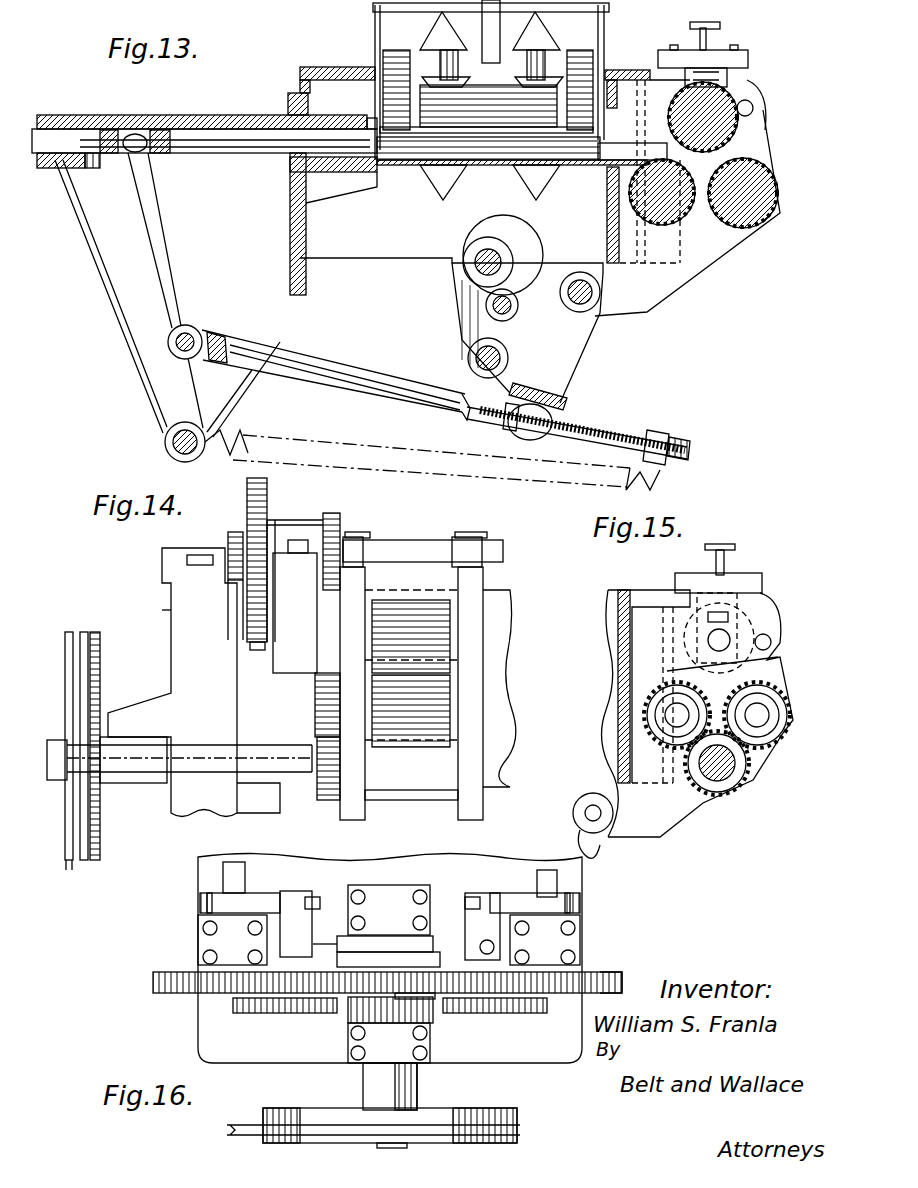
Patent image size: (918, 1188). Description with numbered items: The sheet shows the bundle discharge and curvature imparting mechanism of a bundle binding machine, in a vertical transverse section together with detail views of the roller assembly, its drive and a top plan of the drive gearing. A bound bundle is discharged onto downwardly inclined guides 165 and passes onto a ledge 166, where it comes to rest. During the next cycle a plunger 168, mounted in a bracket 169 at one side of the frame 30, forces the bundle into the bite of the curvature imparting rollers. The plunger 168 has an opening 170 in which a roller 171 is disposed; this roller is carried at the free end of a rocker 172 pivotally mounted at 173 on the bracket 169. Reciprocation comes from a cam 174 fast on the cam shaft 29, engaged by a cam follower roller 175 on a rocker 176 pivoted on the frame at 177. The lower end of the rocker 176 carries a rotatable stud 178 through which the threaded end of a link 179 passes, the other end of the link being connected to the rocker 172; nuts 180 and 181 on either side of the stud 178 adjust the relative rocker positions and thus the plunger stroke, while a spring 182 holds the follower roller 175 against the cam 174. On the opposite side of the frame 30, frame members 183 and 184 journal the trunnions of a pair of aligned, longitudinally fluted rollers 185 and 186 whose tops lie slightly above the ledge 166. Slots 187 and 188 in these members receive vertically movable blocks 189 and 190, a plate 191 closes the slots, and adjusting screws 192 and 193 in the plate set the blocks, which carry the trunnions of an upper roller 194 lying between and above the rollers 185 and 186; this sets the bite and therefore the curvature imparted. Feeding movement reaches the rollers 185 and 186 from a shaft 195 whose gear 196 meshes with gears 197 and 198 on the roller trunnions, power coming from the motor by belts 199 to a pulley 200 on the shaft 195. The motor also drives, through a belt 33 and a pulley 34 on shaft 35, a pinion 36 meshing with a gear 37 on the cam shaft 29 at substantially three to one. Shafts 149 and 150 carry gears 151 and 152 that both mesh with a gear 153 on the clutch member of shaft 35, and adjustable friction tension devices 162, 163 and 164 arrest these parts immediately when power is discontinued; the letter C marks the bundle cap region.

In FIG. 13, the cam shaft 29 is at (480, 250).
In FIG. 13, the frame 30 is at (608, 215).
In FIG. 14, the frame 30 is at (512, 694).
In FIG. 15, the frame 30 is at (683, 724).
In FIG. 16, the belt 33 is at (235, 1128).
In FIG. 16, the pulley 34 is at (514, 1100).
In FIG. 16, the shaft 35 is at (405, 1148).
In FIG. 14, the pinion 36 is at (240, 528).
In FIG. 16, the pinion 36 is at (350, 1016).
In FIG. 16, the gear 37 is at (270, 1013).
In FIG. 14, the shaft 149 is at (430, 560).
In FIG. 16, the shaft 149 is at (556, 863).
In FIG. 16, the shaft 150 is at (247, 879).
In FIG. 14, the gear 151 is at (272, 493).
In FIG. 16, the gear 151 is at (628, 966).
In FIG. 16, the gear 152 is at (173, 963).
In FIG. 14, the gear 153 is at (258, 652).
In FIG. 16, the gear 153 is at (392, 990).
In FIG. 16, the adjustable friction tension device 162 is at (582, 904).
In FIG. 16, the adjustable friction tension device 163 is at (205, 904).
In FIG. 16, the adjustable friction tension device 164 is at (432, 944).
In FIG. 13, the downwardly inclined guides 165 is at (385, 60).
In FIG. 13, the ledge 166 is at (395, 166).
In FIG. 13, the plunger 168 is at (250, 111).
In FIG. 13, the bracket 169 is at (200, 128).
In FIG. 13, the opening 170 is at (150, 128).
In FIG. 13, the roller 171 is at (125, 158).
In FIG. 13, the rocker 172 is at (160, 214).
In FIG. 13, the pivot 173 is at (170, 443).
In FIG. 13, the cam 174 is at (525, 238).
In FIG. 13, the cam follower roller 175 is at (512, 316).
In FIG. 13, the rocker 176 is at (568, 351).
In FIG. 13, the pivot 177 is at (592, 291).
In FIG. 13, the rotatable stud 178 is at (525, 441).
In FIG. 13, the link 179 is at (390, 380).
In FIG. 13, the nut 180 is at (540, 408).
In FIG. 13, the nut 181 is at (505, 430).
In FIG. 13, the spring 182 is at (240, 440).
In FIG. 14, the frame member 183 is at (470, 760).
In FIG. 14, the frame member 184 is at (355, 820).
In FIG. 13, the roller 185 is at (757, 220).
In FIG. 14, the roller 185 is at (385, 746).
In FIG. 13, the roller 186 is at (690, 216).
In FIG. 13, the slot 187 is at (750, 70).
In FIG. 15, the slot 188 is at (745, 612).
In FIG. 13, the block 189 is at (727, 82).
In FIG. 15, the block 190 is at (735, 621).
In FIG. 13, the plate 191 is at (703, 56).
In FIG. 14, the plate 191 is at (405, 600).
In FIG. 15, the plate 191 is at (763, 583).
In FIG. 13, the adjusting screw 192 is at (710, 30).
In FIG. 15, the adjusting screw 193 is at (726, 553).
In FIG. 13, the roller 194 is at (752, 132).
In FIG. 14, the roller 194 is at (440, 600).
In FIG. 14, the shaft 195 is at (282, 740).
In FIG. 15, the shaft 195 is at (722, 781).
In FIG. 14, the gear 196 is at (325, 800).
In FIG. 15, the gear 196 is at (748, 772).
In FIG. 14, the gear 197 is at (315, 684).
In FIG. 15, the gear 197 is at (780, 696).
In FIG. 15, the gear 198 is at (670, 682).
In FIG. 14, the belts 199 is at (100, 905).
In FIG. 14, the pulley 200 is at (100, 852).
In FIG. 13, the cap C is at (548, 98).